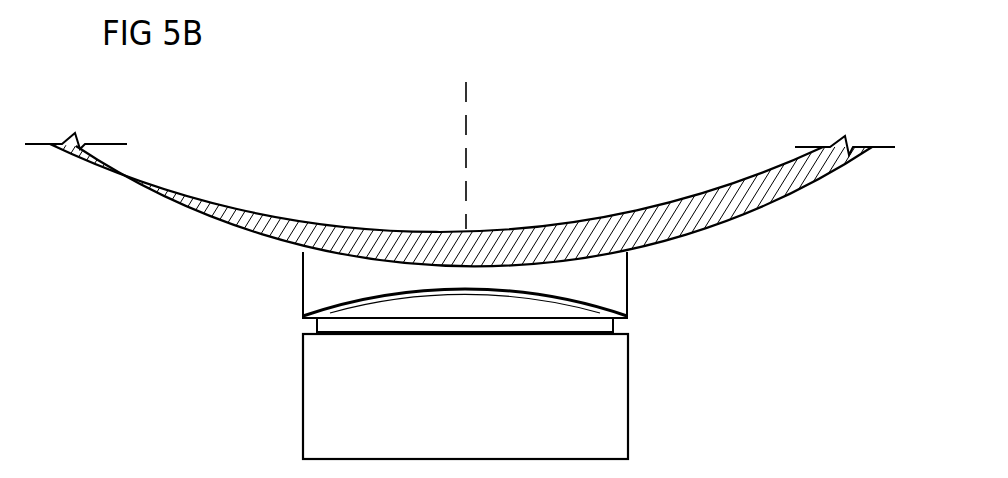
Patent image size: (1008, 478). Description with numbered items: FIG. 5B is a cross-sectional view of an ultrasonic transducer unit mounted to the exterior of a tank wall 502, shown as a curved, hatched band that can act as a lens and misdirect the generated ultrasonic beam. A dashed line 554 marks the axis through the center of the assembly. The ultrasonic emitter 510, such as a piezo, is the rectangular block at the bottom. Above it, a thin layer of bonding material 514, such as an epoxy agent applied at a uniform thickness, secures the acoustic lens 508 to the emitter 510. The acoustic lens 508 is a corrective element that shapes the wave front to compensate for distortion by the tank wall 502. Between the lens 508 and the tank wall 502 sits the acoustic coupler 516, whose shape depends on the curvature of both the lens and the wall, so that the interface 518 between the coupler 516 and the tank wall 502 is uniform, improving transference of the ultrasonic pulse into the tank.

The tank wall 502 is at (257, 227).
The central axis 554 is at (466, 120).
The acoustic coupler 516 is at (302, 280).
The interface 518 is at (633, 252).
The acoustic lens 508 is at (560, 306).
The bonding material 514 is at (317, 327).
The ultrasonic emitter 510 is at (302, 397).